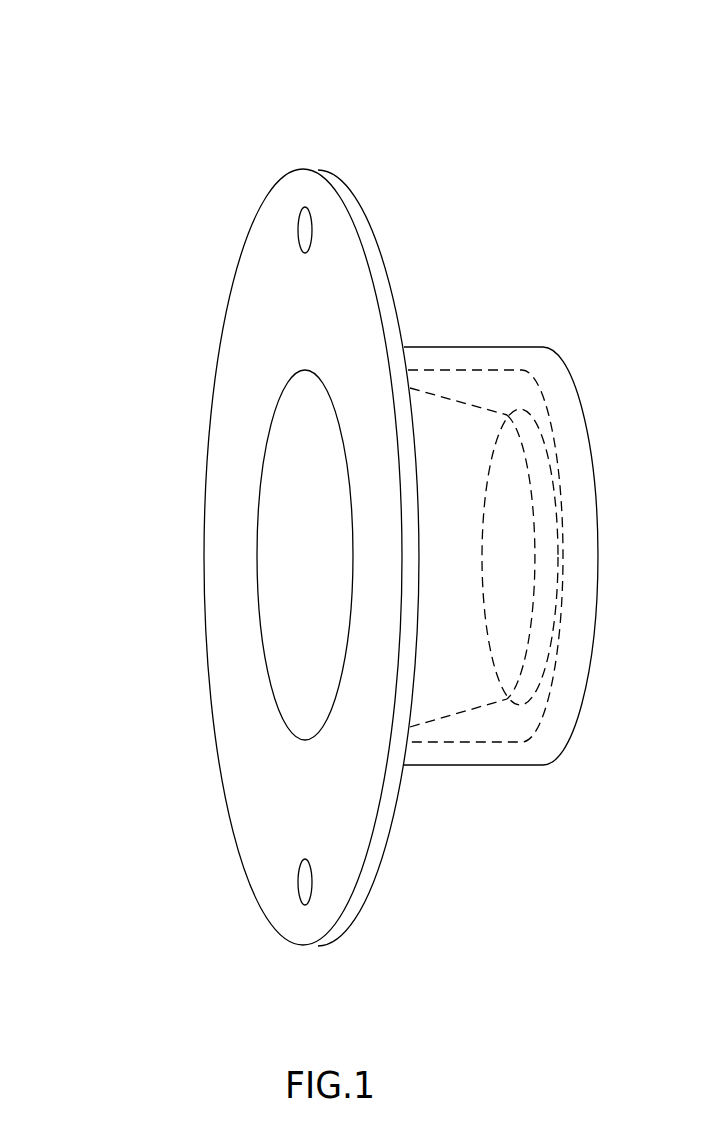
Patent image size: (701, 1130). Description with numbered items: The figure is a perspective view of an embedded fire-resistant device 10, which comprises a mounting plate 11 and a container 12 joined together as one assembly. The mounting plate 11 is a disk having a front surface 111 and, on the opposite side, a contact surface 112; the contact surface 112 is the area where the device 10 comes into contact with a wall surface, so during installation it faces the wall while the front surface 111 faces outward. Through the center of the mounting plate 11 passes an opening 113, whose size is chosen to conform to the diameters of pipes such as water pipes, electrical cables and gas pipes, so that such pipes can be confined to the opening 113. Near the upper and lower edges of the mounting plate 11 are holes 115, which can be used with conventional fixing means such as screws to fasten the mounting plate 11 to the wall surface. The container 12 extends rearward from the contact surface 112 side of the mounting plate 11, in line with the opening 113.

The embedded fire-resistant device 10 is at (165, 122).
The mounting plate 11 is at (333, 207).
The front surface 111 is at (235, 380).
The contact surface 112 is at (392, 280).
The opening 113 is at (527, 372).
The holes 115 is at (302, 880).
The container 12 is at (460, 357).